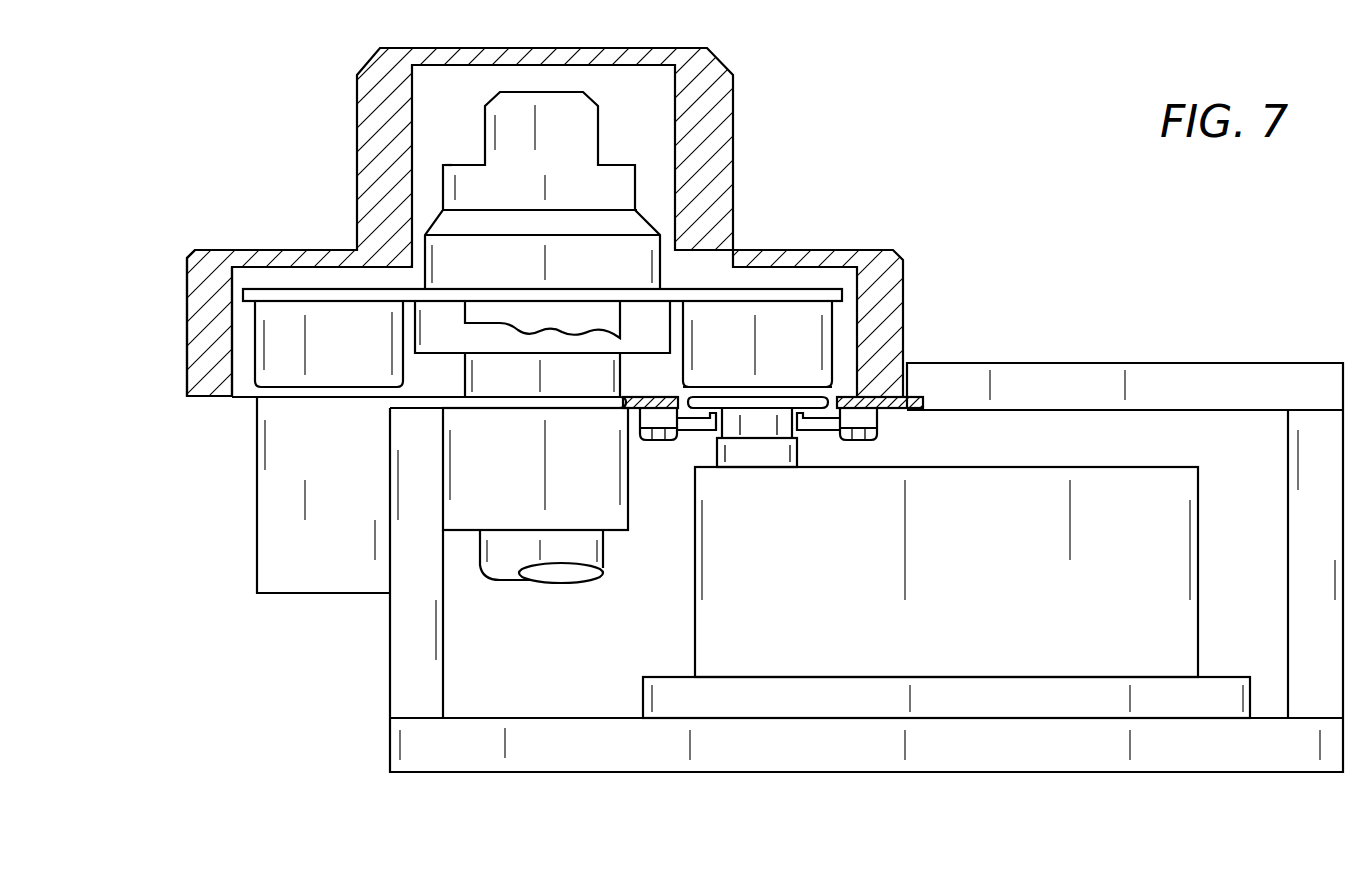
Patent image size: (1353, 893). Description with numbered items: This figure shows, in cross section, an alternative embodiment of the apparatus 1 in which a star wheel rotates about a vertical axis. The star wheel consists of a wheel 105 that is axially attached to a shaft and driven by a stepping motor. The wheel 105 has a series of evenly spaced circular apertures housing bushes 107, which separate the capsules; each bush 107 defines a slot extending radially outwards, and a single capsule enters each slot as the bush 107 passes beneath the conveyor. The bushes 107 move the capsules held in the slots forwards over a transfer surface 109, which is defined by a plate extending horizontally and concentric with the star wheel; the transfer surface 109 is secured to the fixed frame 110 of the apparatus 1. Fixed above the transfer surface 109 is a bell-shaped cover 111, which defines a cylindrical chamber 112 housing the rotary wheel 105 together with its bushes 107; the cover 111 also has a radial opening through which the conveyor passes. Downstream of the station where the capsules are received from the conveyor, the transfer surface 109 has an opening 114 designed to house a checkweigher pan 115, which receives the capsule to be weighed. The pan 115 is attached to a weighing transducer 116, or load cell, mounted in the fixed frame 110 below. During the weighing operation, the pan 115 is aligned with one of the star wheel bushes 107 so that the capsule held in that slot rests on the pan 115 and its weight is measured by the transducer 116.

The apparatus 1 is at (750, 97).
The wheel 105 is at (755, 293).
The bushes 107 is at (305, 350).
The transfer surface 109 is at (413, 403).
The fixed frame 110 is at (415, 502).
The bell-shaped cover 111 is at (217, 282).
The cylindrical chamber 112 is at (290, 278).
The opening 114 is at (833, 398).
The checkweigher pan 115 is at (770, 392).
The weighing transducer 116 is at (980, 570).